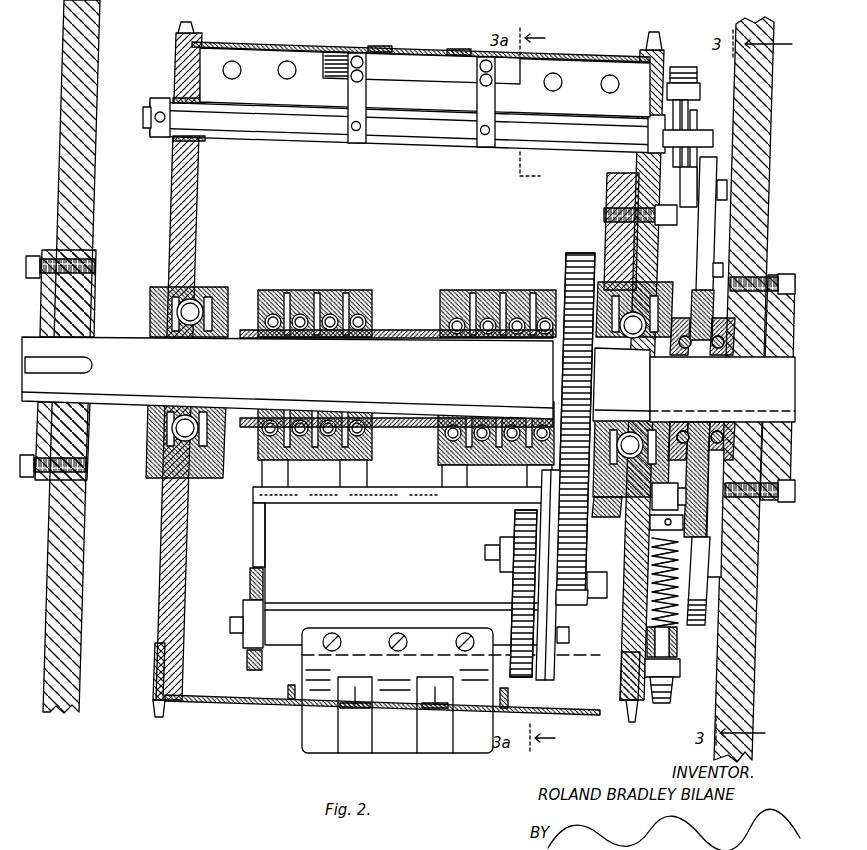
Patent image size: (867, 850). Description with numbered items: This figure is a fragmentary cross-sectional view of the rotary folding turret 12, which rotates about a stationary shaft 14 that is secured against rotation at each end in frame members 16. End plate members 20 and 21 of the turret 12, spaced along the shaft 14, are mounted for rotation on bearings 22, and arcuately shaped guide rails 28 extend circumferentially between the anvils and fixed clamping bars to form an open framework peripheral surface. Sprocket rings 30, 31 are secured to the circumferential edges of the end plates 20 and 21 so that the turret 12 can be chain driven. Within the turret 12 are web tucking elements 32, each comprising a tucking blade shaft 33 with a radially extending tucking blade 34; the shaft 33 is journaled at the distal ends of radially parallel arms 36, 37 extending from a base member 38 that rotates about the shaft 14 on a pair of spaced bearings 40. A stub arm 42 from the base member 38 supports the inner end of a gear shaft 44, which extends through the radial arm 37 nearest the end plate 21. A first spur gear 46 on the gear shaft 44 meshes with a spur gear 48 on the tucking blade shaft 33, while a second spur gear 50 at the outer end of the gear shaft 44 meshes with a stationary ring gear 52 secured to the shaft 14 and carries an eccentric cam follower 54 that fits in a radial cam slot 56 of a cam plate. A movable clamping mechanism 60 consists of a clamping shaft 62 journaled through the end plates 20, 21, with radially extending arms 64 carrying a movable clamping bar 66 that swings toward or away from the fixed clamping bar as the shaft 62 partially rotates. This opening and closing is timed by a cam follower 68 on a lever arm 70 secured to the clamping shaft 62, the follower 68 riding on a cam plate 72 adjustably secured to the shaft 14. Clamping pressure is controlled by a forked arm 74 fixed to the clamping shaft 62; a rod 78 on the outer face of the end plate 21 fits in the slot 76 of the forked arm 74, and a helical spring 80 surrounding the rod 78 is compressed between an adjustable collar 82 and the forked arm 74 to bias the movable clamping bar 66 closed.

The turret 12 is at (338, 20).
The stationary shaft 14 is at (388, 345).
The frame members 16 is at (100, 32).
The end plate member 20 is at (176, 190).
The end plate member 21 is at (622, 660).
The bearings 22 is at (178, 312).
The guide rails 28 is at (358, 710).
The sprocket ring 30 is at (180, 32).
The sprocket ring 31 is at (660, 42).
The web tucking element 32 is at (398, 598).
The tucking blade shaft 33 is at (296, 606).
The tucking blade 34 is at (304, 668).
The radial arm 36 is at (252, 545).
The radial arm 37 is at (546, 672).
The base member 38 is at (405, 503).
The bearings 40 is at (368, 445).
The stub arm 42 is at (505, 517).
The gear shaft 44 is at (485, 550).
The first spur gear 46 is at (515, 560).
The spur gear 48 is at (510, 598).
The second spur gear 50 is at (580, 604).
The stationary ring gear 52 is at (575, 252).
The eccentric cam follower 54 is at (596, 598).
The cam slot 56 is at (666, 506).
The movable clamping mechanism 60 is at (404, 107).
The clamping shaft 62 is at (300, 136).
The radially extending arms 64 is at (346, 80).
The movable clamping bar 66 is at (430, 76).
The cam follower 68 is at (727, 190).
The lever arm 70 is at (690, 118).
The cam plate 72 is at (716, 232).
The forked arm 74 is at (682, 646).
The slot 76 is at (680, 664).
The rod 78 is at (680, 143).
The helical spring 80 is at (675, 580).
The collar 82 is at (681, 488).